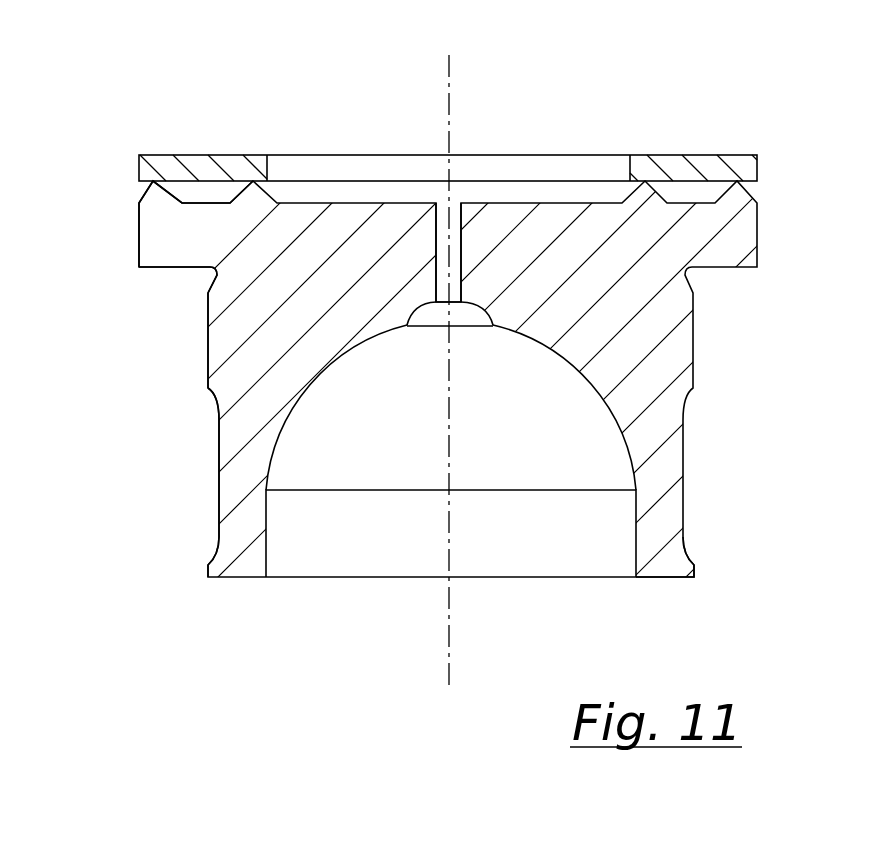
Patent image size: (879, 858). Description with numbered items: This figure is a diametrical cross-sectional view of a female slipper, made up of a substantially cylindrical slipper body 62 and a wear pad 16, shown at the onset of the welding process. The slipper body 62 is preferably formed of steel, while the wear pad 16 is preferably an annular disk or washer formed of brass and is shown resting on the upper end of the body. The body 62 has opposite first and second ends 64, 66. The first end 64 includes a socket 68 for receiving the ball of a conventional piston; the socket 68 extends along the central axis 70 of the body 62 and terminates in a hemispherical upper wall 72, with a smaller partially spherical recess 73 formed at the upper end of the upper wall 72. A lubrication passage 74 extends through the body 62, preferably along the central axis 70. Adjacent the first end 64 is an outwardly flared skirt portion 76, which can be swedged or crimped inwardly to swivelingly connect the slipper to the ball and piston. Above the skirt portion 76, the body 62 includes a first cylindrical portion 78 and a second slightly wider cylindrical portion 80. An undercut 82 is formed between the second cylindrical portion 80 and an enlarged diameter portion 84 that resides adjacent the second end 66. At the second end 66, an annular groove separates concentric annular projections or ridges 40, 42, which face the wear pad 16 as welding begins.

The wear pad 16 is at (655, 154).
The annular projection 40 is at (250, 180).
The annular projection 42 is at (163, 181).
The slipper body 62 is at (703, 368).
The first end 64 is at (662, 578).
The second end 66 is at (541, 180).
The socket 68 is at (322, 395).
The central axis 70 is at (452, 640).
The hemispherical upper wall 72 is at (583, 380).
The partially spherical recess 73 is at (422, 312).
The lubrication passage 74 is at (453, 228).
The flared skirt portion 76 is at (219, 540).
The first cylindrical portion 78 is at (219, 446).
The second cylindrical portion 80 is at (208, 357).
The undercut 82 is at (203, 290).
The enlarged diameter portion 84 is at (137, 222).